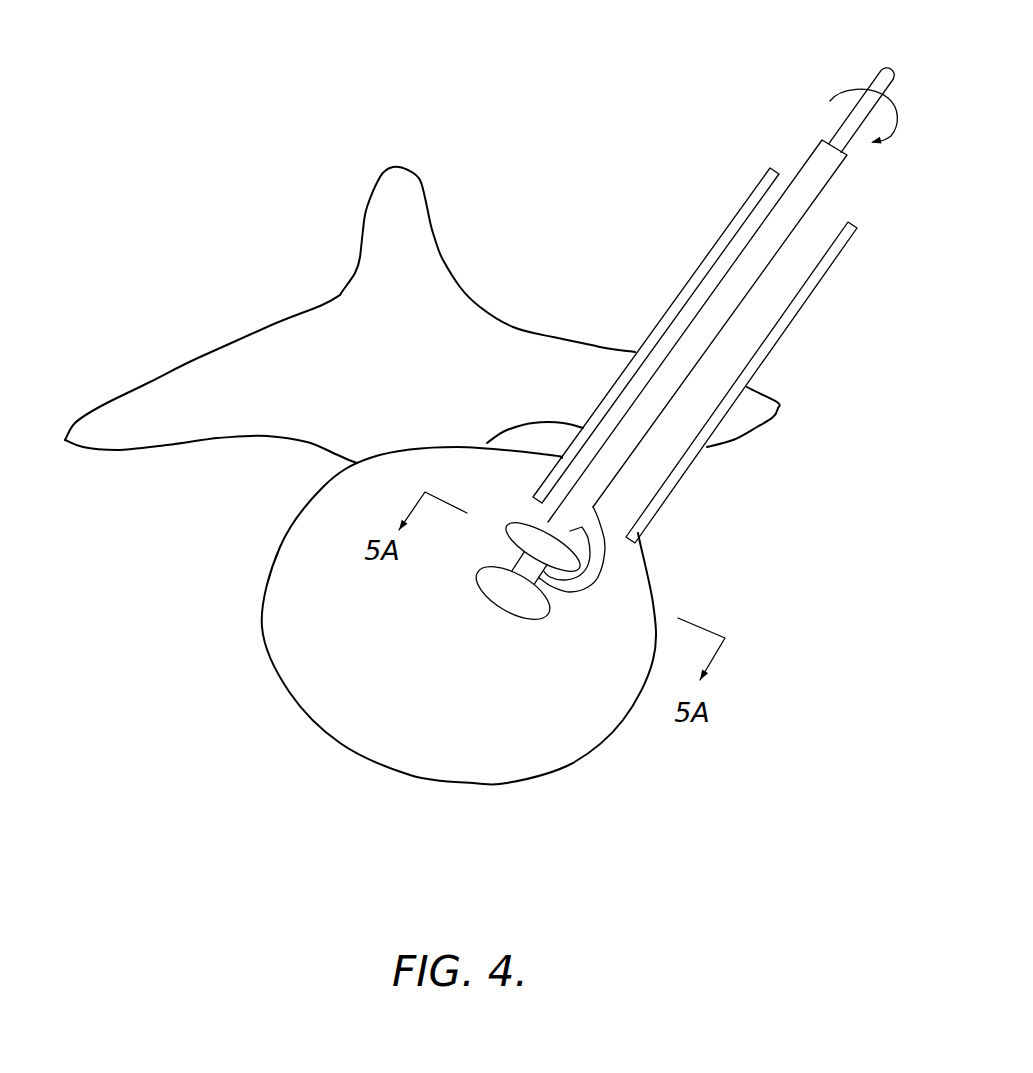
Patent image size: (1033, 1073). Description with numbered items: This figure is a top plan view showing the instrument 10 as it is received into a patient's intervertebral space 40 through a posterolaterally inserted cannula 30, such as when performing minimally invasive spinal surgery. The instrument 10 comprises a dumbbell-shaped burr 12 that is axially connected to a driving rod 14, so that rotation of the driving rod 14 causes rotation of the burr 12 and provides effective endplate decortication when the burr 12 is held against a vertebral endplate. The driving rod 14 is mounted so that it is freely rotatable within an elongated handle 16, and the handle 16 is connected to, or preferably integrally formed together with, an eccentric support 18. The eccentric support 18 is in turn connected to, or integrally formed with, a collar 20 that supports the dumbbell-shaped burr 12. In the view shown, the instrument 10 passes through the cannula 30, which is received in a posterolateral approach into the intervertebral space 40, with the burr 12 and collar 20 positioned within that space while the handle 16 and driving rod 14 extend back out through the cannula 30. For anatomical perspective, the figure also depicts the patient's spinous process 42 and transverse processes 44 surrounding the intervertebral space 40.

The instrument 10 is at (657, 343).
The dumbbell-shaped burr 12 is at (516, 601).
The driving rod 14 is at (884, 72).
The elongated handle 16 is at (616, 447).
The eccentric support 18 is at (573, 588).
The collar 20 is at (527, 570).
The cannula 30 is at (727, 234).
The intervertebral space 40 is at (325, 620).
The spinous process 42 is at (393, 203).
The transverse processes 44 is at (103, 425).